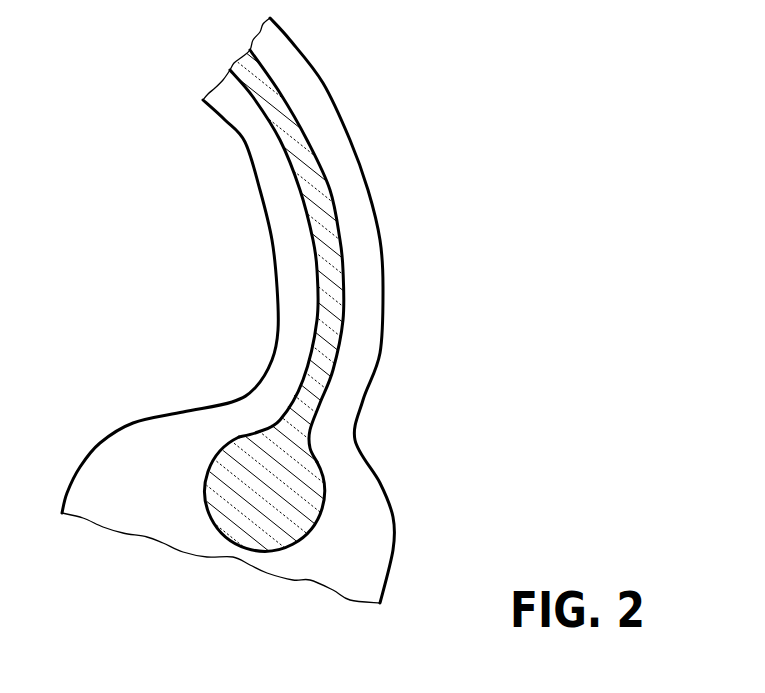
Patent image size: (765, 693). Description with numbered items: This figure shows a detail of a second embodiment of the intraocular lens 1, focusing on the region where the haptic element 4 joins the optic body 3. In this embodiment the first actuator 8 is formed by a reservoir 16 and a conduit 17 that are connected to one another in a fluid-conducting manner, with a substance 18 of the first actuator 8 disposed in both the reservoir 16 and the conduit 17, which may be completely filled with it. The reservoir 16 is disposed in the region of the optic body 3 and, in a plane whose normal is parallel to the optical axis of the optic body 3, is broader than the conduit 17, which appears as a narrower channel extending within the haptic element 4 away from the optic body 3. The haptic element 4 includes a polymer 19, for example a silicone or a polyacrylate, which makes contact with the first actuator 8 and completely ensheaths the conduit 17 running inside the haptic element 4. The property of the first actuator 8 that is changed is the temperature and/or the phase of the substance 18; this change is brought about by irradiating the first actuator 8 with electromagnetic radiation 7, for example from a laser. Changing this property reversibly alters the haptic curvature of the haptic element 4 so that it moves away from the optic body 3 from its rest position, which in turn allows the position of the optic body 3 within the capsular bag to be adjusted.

The intraocular lens 1 is at (92, 260).
The optic body 3 is at (397, 510).
The haptic element 4 is at (375, 197).
The electromagnetic radiation 7 is at (219, 424).
The first actuator 8 is at (193, 518).
The reservoir 16 is at (307, 540).
The conduit 17 is at (307, 125).
The substance 18 is at (337, 273).
The polymer 19 is at (293, 78).